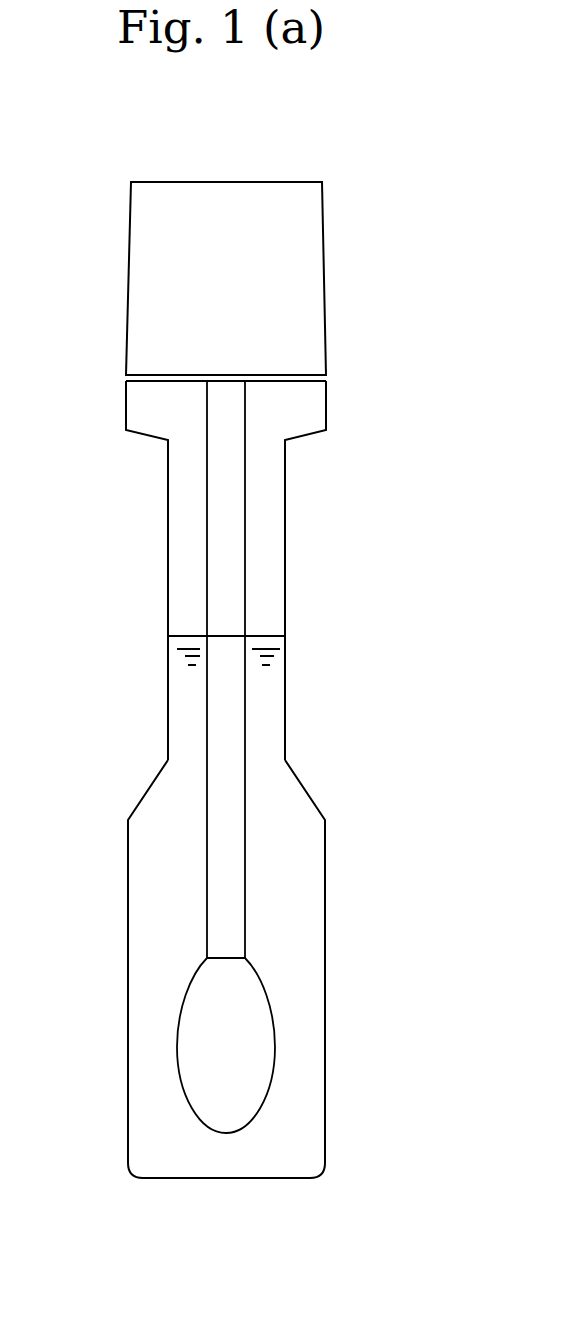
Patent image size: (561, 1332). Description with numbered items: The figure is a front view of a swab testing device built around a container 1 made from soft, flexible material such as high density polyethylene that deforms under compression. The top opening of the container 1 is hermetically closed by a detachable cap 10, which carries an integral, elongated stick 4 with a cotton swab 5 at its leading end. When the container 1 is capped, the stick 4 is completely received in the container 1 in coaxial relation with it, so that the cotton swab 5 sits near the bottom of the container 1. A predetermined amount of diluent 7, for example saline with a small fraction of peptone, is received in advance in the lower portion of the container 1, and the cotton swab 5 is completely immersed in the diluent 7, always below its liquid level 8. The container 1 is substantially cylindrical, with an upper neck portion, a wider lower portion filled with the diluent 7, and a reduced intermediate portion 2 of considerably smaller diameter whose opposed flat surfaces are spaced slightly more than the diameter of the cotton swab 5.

The container 1 is at (108, 839).
The reduced intermediate portion 2 is at (168, 612).
The stick 4 is at (222, 703).
The cotton swab 5 is at (200, 1064).
The diluent 7 is at (153, 928).
The liquid level 8 is at (257, 636).
The cap 10 is at (128, 256).